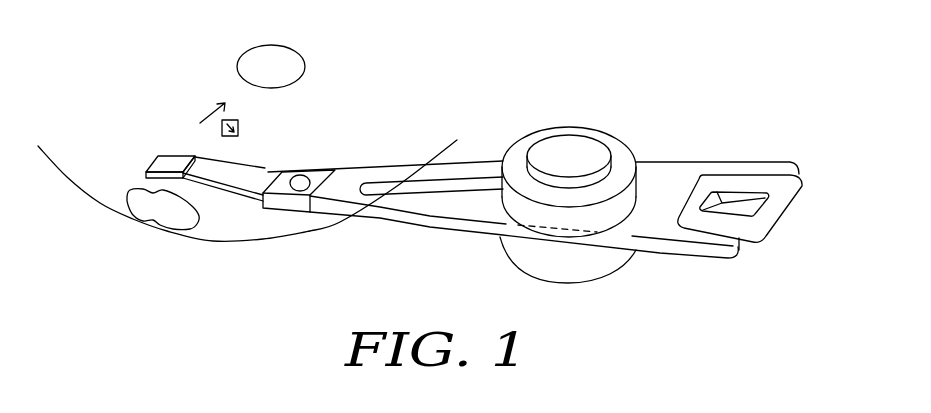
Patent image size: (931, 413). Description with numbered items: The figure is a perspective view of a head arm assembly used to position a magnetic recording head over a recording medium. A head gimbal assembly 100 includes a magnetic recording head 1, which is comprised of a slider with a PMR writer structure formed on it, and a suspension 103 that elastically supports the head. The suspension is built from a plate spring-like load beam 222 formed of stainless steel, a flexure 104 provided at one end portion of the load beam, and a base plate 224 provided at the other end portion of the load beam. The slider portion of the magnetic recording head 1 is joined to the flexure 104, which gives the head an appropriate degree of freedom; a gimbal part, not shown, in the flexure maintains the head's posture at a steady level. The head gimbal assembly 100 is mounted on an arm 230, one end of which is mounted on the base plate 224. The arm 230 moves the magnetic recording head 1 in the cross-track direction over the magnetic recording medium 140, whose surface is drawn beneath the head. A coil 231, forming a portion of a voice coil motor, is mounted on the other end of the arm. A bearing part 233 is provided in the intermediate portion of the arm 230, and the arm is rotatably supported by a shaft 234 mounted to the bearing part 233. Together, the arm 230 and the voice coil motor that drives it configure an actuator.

The magnetic recording head 1 is at (157, 154).
The head gimbal assembly 100 is at (246, 215).
The suspension 103 is at (437, 128).
The flexure 104 is at (147, 172).
The magnetic recording medium 140 is at (140, 223).
The load beam 222 is at (263, 172).
The base plate 224 is at (332, 168).
The arm 230 is at (397, 218).
The coil 231 is at (777, 222).
The bearing part 233 is at (522, 147).
The shaft 234 is at (571, 147).